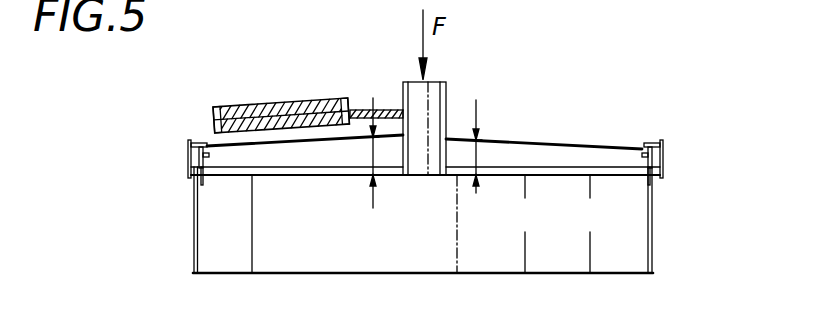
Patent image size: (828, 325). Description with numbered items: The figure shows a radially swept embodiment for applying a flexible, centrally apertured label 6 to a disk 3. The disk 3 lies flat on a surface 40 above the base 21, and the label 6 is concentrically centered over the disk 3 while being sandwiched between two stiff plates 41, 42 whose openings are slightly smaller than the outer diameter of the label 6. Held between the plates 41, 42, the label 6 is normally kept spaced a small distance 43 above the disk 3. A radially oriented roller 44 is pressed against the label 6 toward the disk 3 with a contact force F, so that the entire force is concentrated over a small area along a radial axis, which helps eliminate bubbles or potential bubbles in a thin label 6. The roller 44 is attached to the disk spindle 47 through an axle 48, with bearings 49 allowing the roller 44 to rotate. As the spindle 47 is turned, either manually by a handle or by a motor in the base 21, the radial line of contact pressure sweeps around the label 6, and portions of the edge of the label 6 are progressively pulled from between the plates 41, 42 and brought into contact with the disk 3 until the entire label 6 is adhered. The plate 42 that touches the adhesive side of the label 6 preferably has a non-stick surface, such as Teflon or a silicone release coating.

The base 21 is at (654, 210).
The disk 3 is at (262, 168).
The surface 40 is at (322, 173).
The label 6 is at (294, 148).
The disk spindle 47 is at (447, 100).
The stiff plate 41 is at (200, 146).
The stiff plate 42 is at (204, 172).
The distance 43 is at (377, 157).
The radially oriented roller 44 is at (300, 99).
The bearings 49 is at (205, 109).
The axle 48 is at (390, 109).